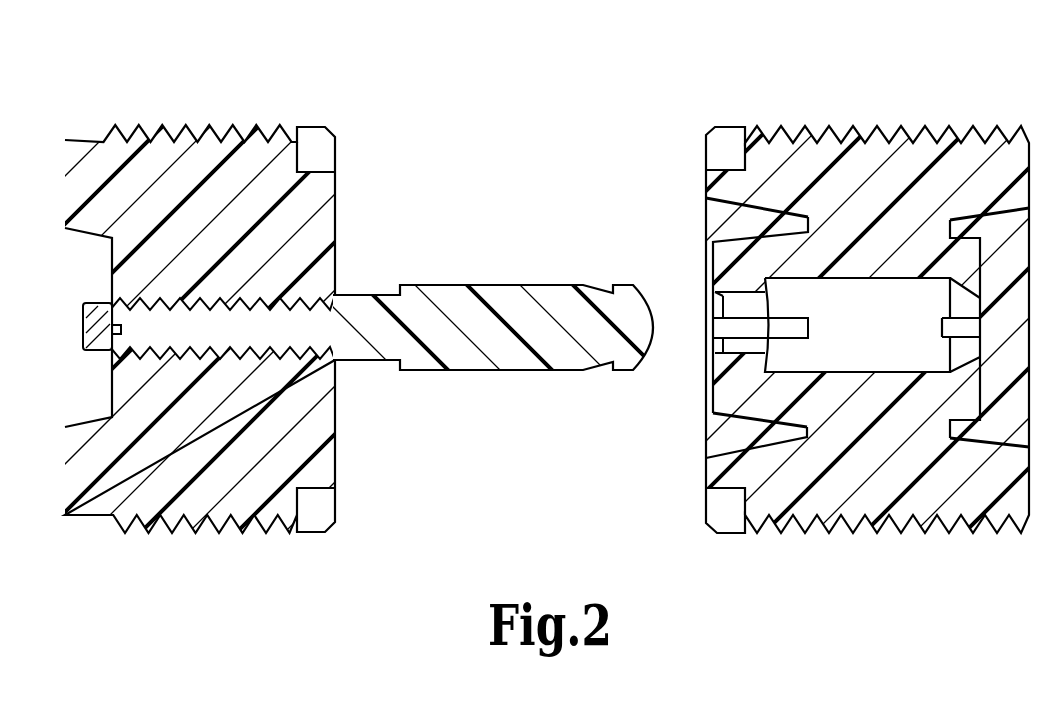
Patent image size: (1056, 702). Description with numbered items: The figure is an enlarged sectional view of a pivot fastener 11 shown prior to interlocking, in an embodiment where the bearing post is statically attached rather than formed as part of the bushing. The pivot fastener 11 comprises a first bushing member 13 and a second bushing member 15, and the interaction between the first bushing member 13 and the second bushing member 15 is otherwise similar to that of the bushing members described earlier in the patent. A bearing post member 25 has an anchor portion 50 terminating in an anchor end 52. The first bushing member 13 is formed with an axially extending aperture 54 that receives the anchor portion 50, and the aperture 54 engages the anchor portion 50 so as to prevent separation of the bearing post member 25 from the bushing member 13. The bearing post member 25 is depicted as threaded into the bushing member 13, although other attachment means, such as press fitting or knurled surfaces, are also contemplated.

The pivot fastener 11 is at (546, 102).
The first bushing member 13 is at (212, 101).
The second bushing member 15 is at (889, 101).
The bearing post member 25 is at (522, 290).
The anchor portion 50 is at (189, 298).
The anchor end 52 is at (100, 320).
The axially extending aperture 54 is at (269, 298).